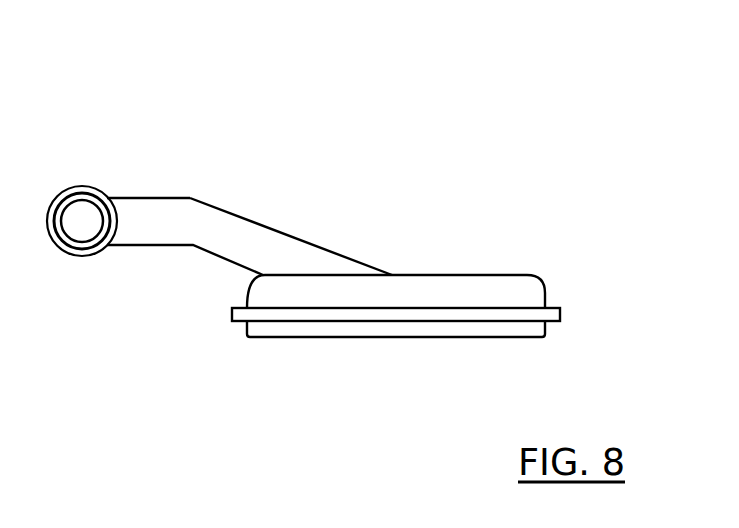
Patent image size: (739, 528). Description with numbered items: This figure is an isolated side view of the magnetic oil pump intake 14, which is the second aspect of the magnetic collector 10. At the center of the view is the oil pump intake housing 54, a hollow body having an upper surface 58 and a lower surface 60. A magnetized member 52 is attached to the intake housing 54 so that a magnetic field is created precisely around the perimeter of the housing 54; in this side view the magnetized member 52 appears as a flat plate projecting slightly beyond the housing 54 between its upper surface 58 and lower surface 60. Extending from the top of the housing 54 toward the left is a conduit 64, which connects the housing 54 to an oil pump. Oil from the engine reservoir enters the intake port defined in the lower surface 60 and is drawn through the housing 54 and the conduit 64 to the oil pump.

The magnetic collector 10 is at (346, 158).
The magnetic oil pump intake 14 is at (496, 362).
The magnetized member 52 is at (245, 329).
The oil pump intake housing 54 is at (467, 283).
The upper surface 58 is at (393, 282).
The lower surface 60 is at (412, 328).
The conduit 64 is at (161, 210).